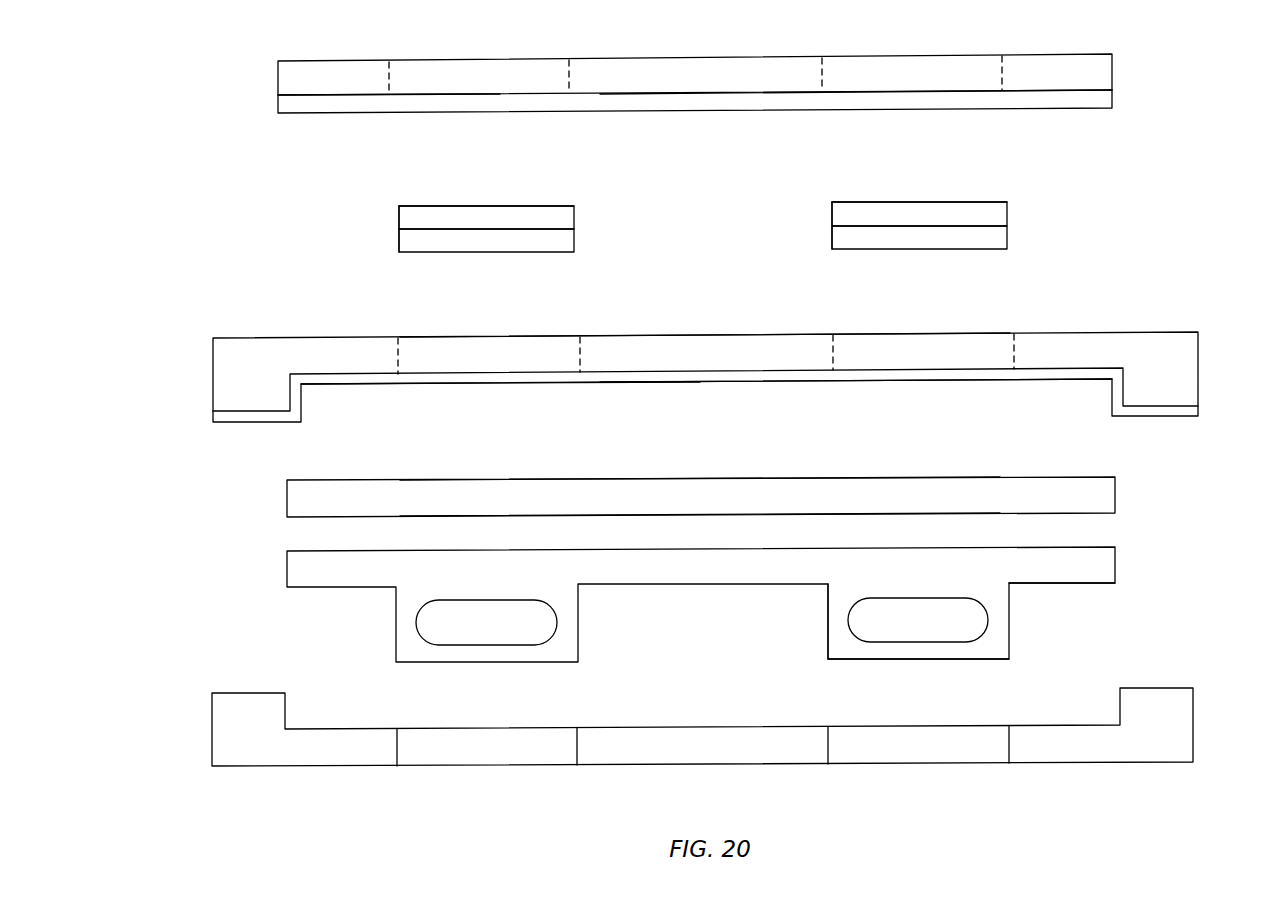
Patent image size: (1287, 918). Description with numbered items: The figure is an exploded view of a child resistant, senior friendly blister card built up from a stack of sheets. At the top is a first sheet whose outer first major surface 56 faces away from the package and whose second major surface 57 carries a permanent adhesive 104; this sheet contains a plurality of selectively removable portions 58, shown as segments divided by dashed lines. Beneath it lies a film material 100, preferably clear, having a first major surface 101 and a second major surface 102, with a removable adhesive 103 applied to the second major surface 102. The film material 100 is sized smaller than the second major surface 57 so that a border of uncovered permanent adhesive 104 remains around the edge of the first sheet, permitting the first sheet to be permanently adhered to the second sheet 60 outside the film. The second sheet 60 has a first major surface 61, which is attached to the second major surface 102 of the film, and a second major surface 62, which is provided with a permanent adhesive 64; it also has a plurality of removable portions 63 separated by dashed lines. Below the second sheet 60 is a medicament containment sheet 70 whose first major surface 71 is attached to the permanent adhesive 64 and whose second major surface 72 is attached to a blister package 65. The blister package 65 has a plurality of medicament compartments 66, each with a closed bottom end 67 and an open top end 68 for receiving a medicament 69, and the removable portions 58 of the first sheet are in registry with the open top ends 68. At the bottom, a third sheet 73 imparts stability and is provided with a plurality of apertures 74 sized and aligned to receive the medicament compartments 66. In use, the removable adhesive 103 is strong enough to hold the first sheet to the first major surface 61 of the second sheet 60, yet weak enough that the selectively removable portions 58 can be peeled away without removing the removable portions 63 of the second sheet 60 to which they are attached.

The first major surface of first sheet 56 is at (300, 58).
The second major surface of first sheet 57 is at (318, 96).
The selectively removable portions 58 is at (468, 72).
The permanent adhesive 104 is at (687, 102).
The film material 100 is at (566, 218).
The first major surface of film material 101 is at (478, 205).
The second major surface of film material 102 is at (421, 229).
The removable adhesive 103 is at (566, 244).
The second sheet 60 is at (1200, 377).
The first major surface of second sheet 61 is at (700, 335).
The second major surface of second sheet 62 is at (668, 373).
The removable portions of second sheet 63 is at (473, 350).
The permanent adhesive on second sheet 64 is at (452, 384).
The medicament containment sheet 70 is at (1040, 488).
The first major surface of containment sheet 71 is at (685, 480).
The second major surface of containment sheet 72 is at (700, 515).
The blister package 65 is at (1100, 571).
The medicament compartments 66 is at (835, 648).
The closed bottom end 67 is at (985, 657).
The open top end 68 is at (1012, 588).
The medicament 69 is at (868, 620).
The third sheet 73 is at (1200, 727).
The apertures 74 is at (473, 757).